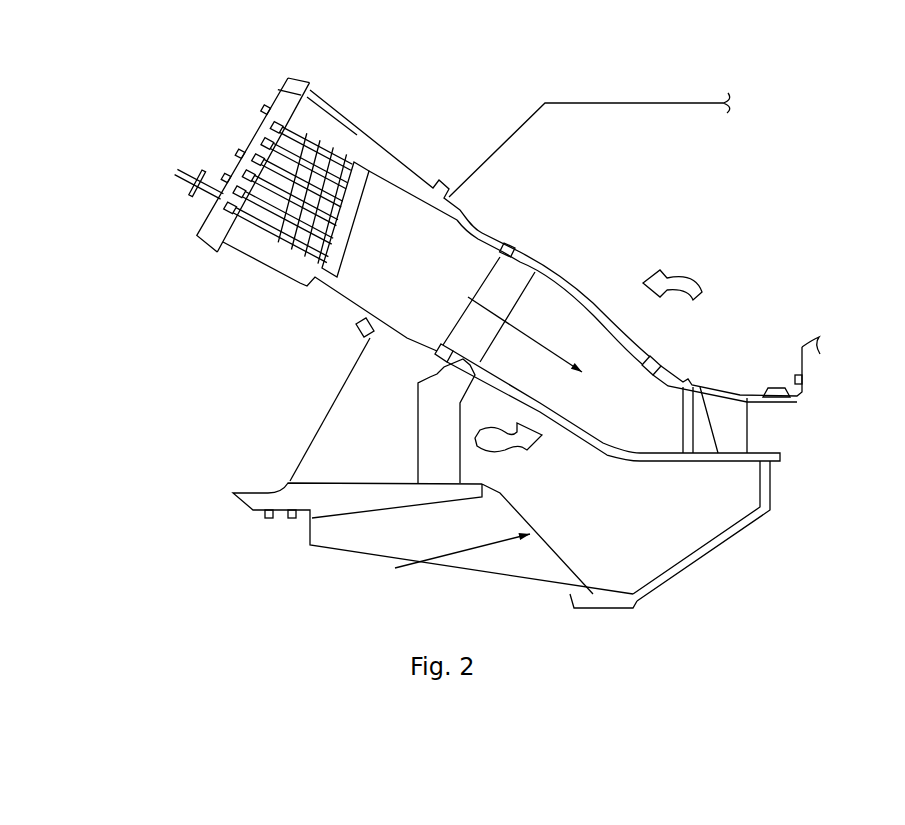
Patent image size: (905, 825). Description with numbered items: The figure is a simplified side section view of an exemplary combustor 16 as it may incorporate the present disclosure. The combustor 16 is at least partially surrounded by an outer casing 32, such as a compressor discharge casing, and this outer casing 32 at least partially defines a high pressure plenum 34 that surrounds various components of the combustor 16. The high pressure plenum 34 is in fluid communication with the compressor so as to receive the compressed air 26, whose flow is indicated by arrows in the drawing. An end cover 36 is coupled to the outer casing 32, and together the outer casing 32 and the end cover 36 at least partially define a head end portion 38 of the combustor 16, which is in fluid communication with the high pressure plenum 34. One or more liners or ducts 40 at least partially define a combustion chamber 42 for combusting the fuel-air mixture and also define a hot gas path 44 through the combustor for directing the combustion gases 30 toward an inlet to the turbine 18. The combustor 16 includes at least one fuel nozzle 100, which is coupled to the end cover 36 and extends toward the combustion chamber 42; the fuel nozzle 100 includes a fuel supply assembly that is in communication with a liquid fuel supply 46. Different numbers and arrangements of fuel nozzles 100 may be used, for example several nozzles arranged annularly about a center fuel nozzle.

The combustor 16 is at (571, 71).
The turbine 18 is at (785, 437).
The compressed air 26 is at (683, 278).
The combustion gases 30 is at (550, 348).
The outer casing 32 is at (521, 126).
The high pressure plenum 34 is at (690, 190).
The end cover 36 is at (209, 213).
The head end portion 38 is at (271, 262).
The liner or duct 40 is at (470, 215).
The combustion chamber 42 is at (402, 252).
The hot gas path 44 is at (547, 313).
The liquid fuel supply 46 is at (175, 166).
The fuel nozzle 100 is at (303, 262).